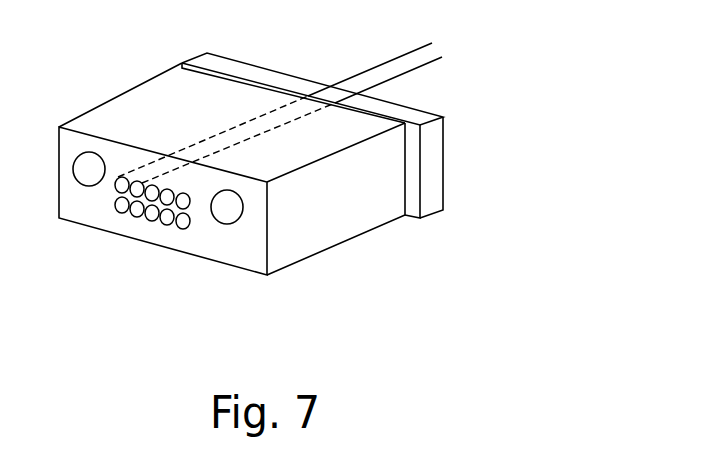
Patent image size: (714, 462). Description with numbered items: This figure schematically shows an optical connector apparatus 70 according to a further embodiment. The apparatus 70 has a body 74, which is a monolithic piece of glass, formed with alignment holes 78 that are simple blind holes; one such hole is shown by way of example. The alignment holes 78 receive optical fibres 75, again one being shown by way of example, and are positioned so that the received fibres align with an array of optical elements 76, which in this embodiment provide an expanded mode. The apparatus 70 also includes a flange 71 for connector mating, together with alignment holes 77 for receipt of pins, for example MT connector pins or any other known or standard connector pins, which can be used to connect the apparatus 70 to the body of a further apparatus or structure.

The apparatus 70 is at (393, 250).
The flange 71 is at (443, 155).
The body 74 is at (322, 253).
The optical fibres 75 is at (364, 72).
The array of optical elements 76 is at (150, 221).
The alignment holes 77 is at (84, 186).
The alignment holes 78 is at (313, 92).